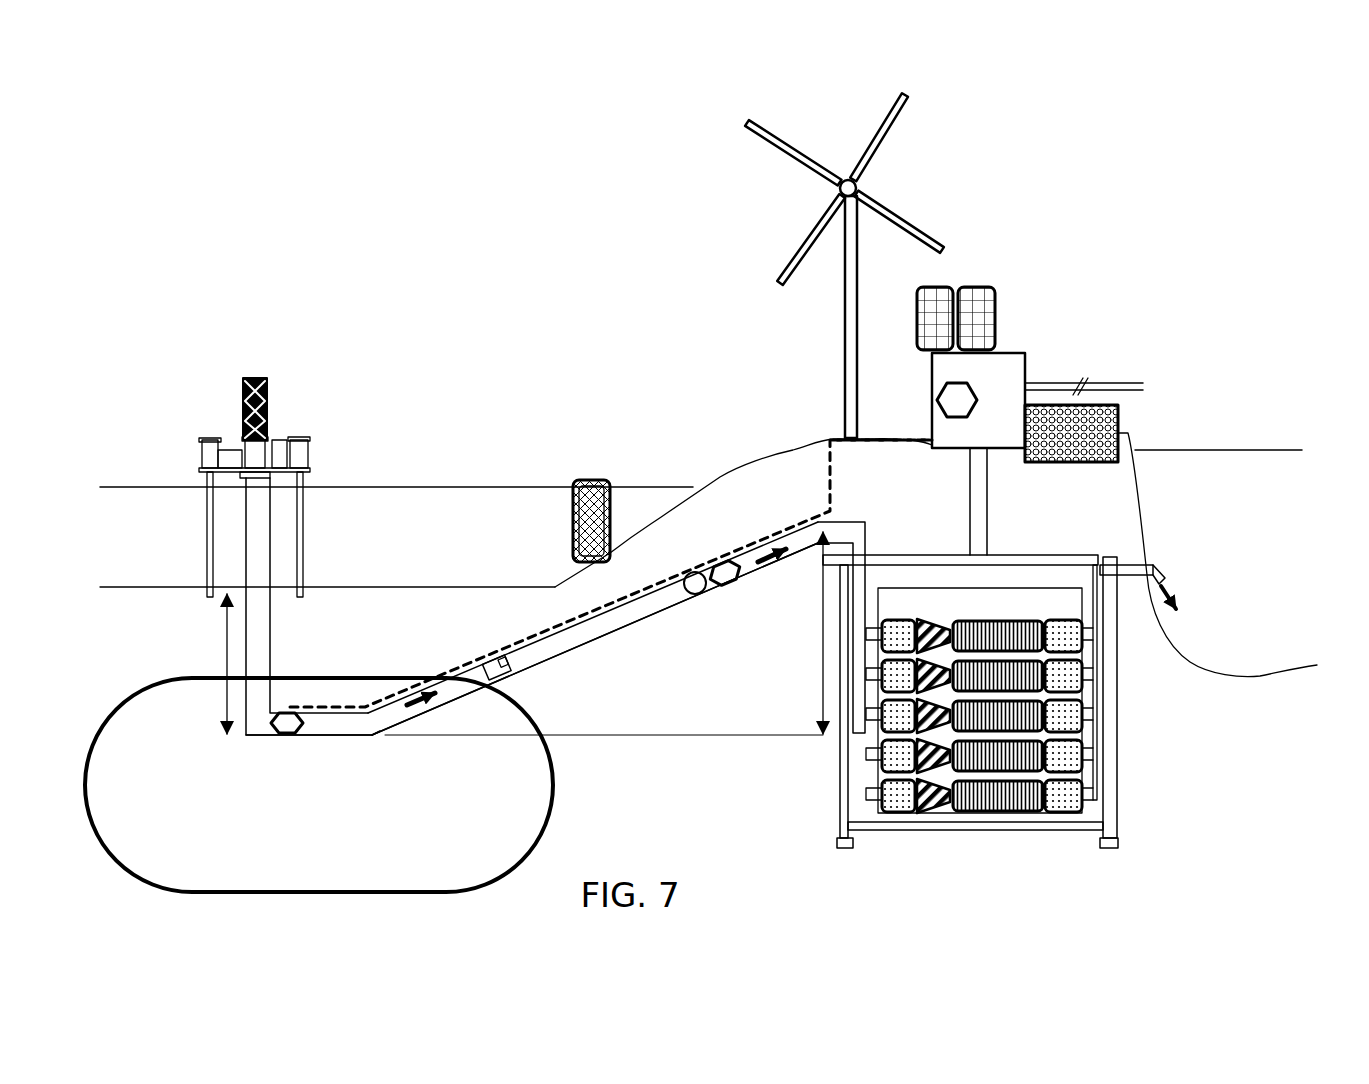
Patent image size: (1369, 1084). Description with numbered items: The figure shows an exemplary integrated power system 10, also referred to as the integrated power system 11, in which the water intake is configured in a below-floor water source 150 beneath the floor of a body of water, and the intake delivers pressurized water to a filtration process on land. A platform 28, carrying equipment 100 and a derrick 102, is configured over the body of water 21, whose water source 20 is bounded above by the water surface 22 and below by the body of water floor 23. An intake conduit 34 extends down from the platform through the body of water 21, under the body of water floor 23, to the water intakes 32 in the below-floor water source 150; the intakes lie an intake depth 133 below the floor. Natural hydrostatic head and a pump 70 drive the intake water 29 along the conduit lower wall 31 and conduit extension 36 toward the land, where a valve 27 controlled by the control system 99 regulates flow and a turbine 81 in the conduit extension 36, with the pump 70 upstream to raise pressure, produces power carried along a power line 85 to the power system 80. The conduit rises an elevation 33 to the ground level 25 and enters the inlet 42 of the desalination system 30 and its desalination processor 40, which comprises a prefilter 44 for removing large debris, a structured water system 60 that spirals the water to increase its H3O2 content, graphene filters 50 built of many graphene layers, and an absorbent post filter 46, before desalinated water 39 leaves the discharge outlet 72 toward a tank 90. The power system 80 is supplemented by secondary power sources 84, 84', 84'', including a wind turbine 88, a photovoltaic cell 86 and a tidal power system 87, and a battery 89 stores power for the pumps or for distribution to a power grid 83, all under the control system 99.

The integrated power system 10 is at (1074, 148).
The integrated power system 11 is at (967, 299).
The water source 20 is at (516, 491).
The body of water 21 is at (436, 503).
The water surface 22 is at (512, 484).
The body of water floor 23 is at (516, 582).
The ground level 25 is at (883, 439).
The valve 27 is at (497, 679).
The platform 28 is at (204, 456).
The intake water 29 is at (592, 633).
The desalination system 30 is at (1130, 684).
The conduit lower wall 31 is at (353, 738).
The water intake 32 is at (262, 727).
The elevation height 33 is at (822, 613).
The intake conduit 34 is at (313, 727).
The conduit extension 36 is at (652, 606).
The desalinated water 39 is at (1149, 566).
The desalination processor 40 is at (1012, 760).
The inlet 42 is at (861, 547).
The prefilter 44 is at (897, 801).
The post filter 46 is at (1060, 801).
The graphene filter 50 is at (1000, 801).
The structured water system 60 is at (935, 801).
The pump 70 is at (697, 592).
The discharge outlet 72 is at (1158, 572).
The power system 80 is at (959, 324).
The turbine 81 is at (281, 713).
The power grid 83 is at (1117, 385).
The secondary power source 84 is at (864, 265).
The secondary power source 84' is at (995, 318).
The secondary power source 84'' is at (617, 490).
The power line 85 is at (831, 487).
The photovoltaic cell 86 is at (972, 335).
The tidal power system 87 is at (592, 479).
The wind turbine 88 is at (859, 190).
The battery 89 is at (1065, 464).
The tank 90 is at (1208, 475).
The control system 99 is at (947, 396).
The equipment unit 100 is at (281, 446).
The derrick 102 is at (237, 453).
The intake depth 133 is at (223, 657).
The below-floor water source 150 is at (353, 684).